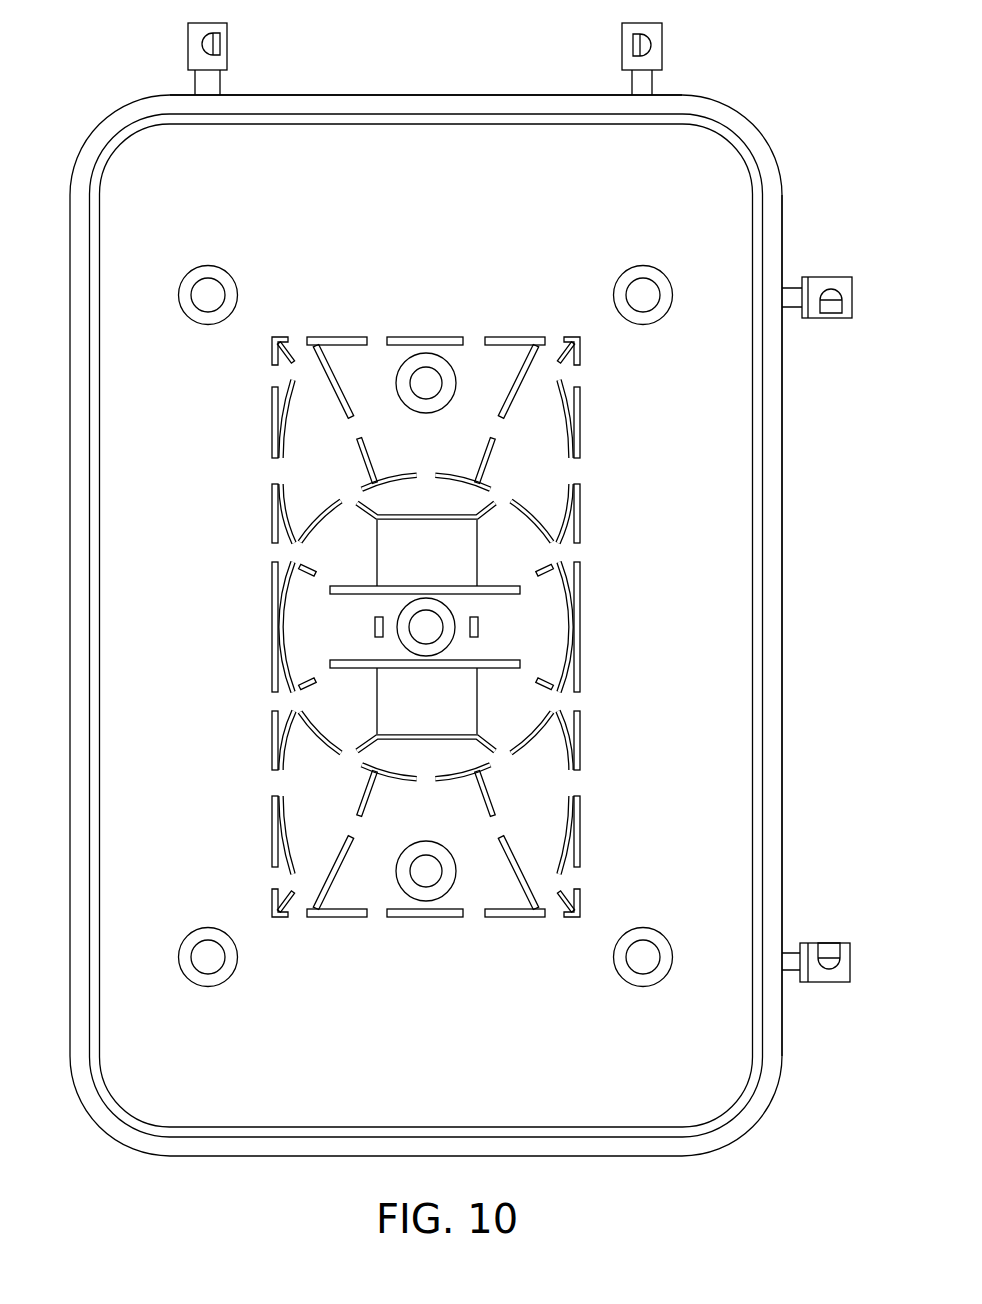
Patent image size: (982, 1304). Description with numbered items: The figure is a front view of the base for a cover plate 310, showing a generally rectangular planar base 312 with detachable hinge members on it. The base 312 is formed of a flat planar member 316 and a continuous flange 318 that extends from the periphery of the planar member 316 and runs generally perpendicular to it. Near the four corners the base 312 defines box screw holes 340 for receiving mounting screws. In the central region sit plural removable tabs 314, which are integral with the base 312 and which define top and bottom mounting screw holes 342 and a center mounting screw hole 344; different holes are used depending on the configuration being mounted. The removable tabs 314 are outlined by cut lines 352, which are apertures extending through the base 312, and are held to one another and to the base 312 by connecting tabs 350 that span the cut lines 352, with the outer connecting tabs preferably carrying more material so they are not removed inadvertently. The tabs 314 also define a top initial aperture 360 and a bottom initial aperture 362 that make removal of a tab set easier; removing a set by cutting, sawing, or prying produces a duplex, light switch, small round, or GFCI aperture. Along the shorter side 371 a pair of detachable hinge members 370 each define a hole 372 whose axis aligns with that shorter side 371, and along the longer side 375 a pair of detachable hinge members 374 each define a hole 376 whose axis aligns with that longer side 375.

The cover plate 310 is at (106, 1182).
The base 312 is at (122, 107).
The removable tabs 314 is at (295, 625).
The planar member 316 is at (438, 138).
The continuous flange 318 is at (595, 120).
The box screw holes 340 is at (203, 290).
The top and bottom mounting screw holes 342 is at (430, 386).
The center mounting screw hole 344 is at (430, 627).
The connecting tabs 350 is at (277, 472).
The cut lines 352 is at (277, 510).
The top initial aperture 360 is at (445, 548).
The bottom initial aperture 362 is at (442, 697).
The detachable hinge members 370 is at (223, 31).
The shorter side 371 is at (512, 88).
The hole 372 is at (221, 46).
The detachable hinge members 374 is at (847, 283).
The longer side 375 is at (792, 482).
The hole 376 is at (832, 312).